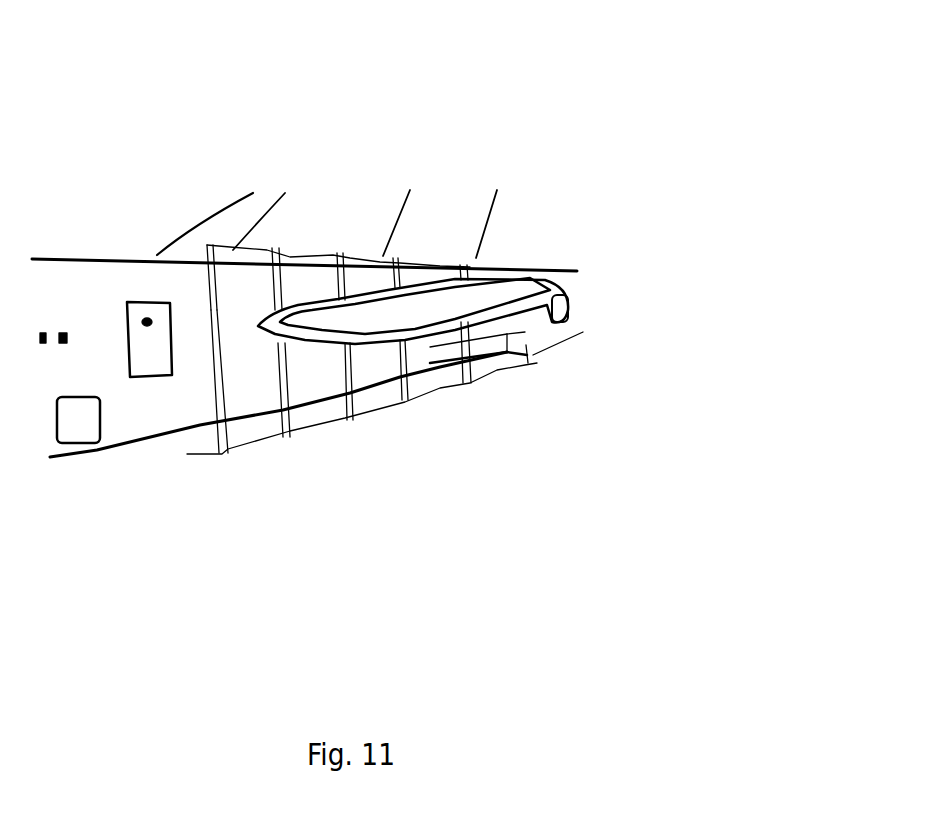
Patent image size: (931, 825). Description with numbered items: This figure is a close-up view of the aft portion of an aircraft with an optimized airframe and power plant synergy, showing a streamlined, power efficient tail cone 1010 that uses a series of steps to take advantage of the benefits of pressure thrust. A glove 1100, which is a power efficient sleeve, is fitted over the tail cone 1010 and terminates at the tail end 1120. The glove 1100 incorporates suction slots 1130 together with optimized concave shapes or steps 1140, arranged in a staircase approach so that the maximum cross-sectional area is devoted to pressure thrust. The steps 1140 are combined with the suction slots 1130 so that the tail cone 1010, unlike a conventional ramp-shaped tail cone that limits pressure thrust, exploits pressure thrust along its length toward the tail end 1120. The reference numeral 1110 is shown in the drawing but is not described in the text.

The glove 1100 is at (418, 268).
The tail end 1120 is at (553, 292).
The mounting block 1110 is at (490, 283).
The suction slots 1130 is at (403, 377).
The concave shapes or steps 1140 is at (252, 428).
The tail cone 1010 is at (307, 390).